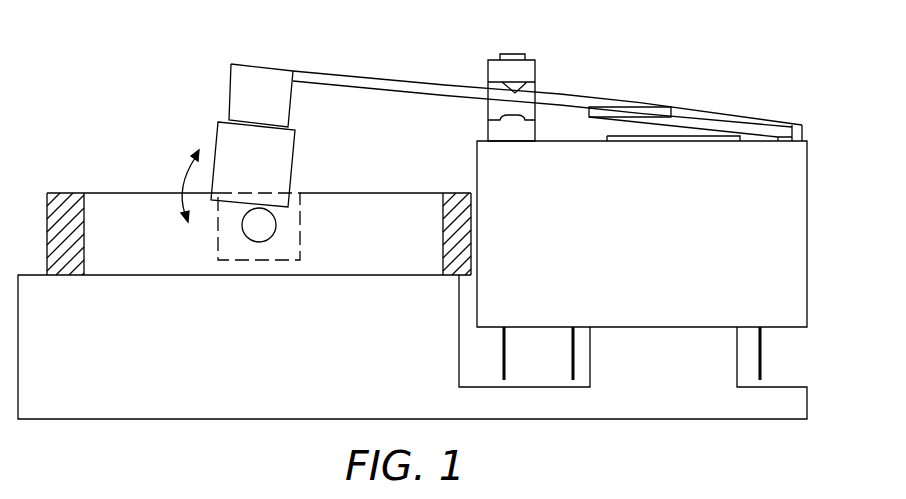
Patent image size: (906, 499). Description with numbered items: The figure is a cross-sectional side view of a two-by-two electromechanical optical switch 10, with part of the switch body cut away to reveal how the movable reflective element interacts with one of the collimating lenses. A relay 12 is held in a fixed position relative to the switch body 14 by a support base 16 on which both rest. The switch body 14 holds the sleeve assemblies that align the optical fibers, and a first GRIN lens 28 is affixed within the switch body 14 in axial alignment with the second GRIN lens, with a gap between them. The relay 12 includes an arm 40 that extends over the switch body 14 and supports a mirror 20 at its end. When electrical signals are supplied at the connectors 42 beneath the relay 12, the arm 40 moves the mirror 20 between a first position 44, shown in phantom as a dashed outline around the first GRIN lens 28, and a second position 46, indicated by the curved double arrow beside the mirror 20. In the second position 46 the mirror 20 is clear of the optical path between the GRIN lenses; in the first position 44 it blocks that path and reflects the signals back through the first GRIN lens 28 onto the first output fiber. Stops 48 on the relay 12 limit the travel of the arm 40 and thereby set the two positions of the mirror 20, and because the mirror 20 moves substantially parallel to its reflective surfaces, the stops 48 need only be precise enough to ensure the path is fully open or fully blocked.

The 2×2 electromechanical optical switch 10 is at (657, 57).
The relay 12 is at (808, 207).
The switch body 14 is at (67, 193).
The support base 16 is at (625, 419).
The mirror 20 is at (292, 160).
The first GRIN lens 28 is at (277, 224).
The arm 40 is at (342, 75).
The connectors 42 is at (760, 358).
The first position 44 is at (218, 225).
The second position 46 is at (216, 147).
The stops 48 is at (510, 121).